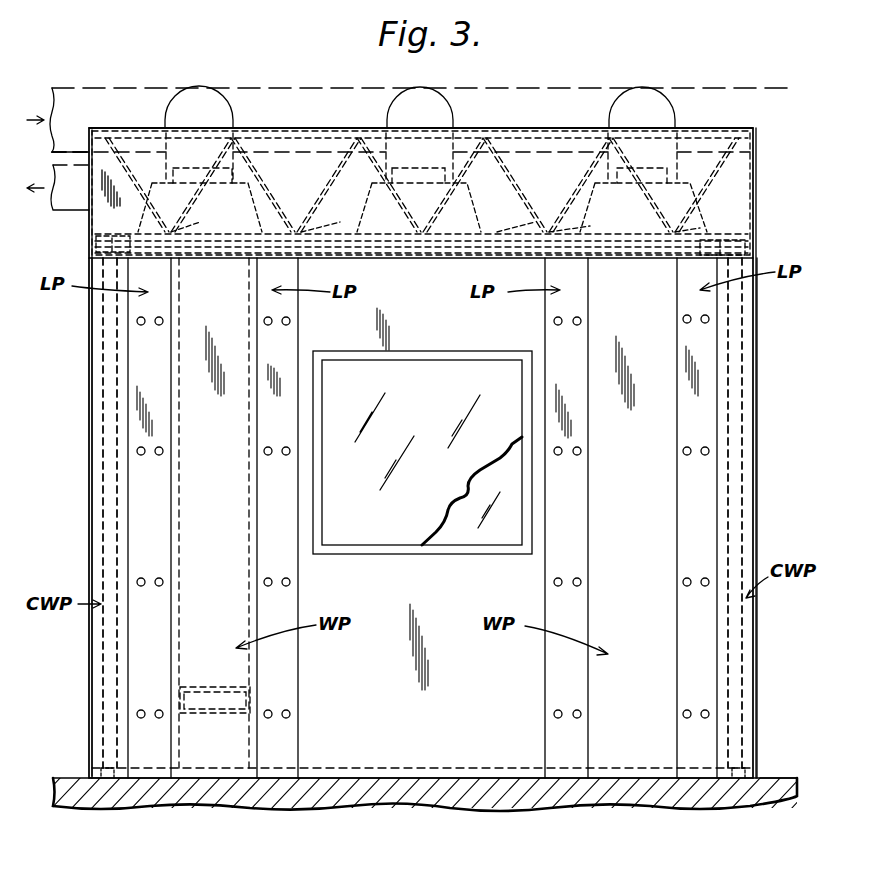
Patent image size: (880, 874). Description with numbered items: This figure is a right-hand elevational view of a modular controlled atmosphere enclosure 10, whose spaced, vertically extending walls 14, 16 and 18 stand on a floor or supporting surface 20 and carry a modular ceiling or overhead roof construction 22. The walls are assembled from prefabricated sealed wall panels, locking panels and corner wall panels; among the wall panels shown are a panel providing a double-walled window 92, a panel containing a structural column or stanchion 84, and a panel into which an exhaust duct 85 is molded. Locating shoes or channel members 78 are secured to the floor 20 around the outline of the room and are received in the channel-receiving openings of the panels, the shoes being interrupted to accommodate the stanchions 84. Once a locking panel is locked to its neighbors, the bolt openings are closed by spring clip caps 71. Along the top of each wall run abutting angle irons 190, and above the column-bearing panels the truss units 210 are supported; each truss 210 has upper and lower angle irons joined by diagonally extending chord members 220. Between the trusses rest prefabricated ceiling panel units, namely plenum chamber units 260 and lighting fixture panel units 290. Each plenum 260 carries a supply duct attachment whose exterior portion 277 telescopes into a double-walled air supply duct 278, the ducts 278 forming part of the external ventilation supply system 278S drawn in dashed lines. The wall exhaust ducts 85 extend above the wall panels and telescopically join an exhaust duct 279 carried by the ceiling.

The modular controlled atmosphere enclosure 10 is at (712, 72).
The wall 14 is at (758, 357).
The wall 16 is at (448, 748).
The wall 18 is at (88, 358).
The floor or supporting surface 20 is at (788, 790).
The modular ceiling or overhead roof construction 22 is at (733, 186).
The spring clip cap 71 is at (700, 729).
The locating shoes or channel members 78 is at (100, 772).
The structural column member or stanchion 84 is at (106, 500).
The exhaust duct 85 is at (244, 699).
The double-walled window 92 is at (447, 371).
The angle iron 190 is at (130, 213).
The support truss unit 210 is at (706, 132).
The diagonally extending chord member 220 is at (258, 183).
The plenum chamber unit 260 is at (260, 214).
The exterior portion of supply duct attachment 277 is at (210, 172).
The air supply duct 278 is at (165, 121).
The external ventilation supply system 278S is at (278, 86).
The exhaust duct carried by the ceiling 279 is at (79, 212).
The lighting fixture panel unit 290 is at (337, 228).